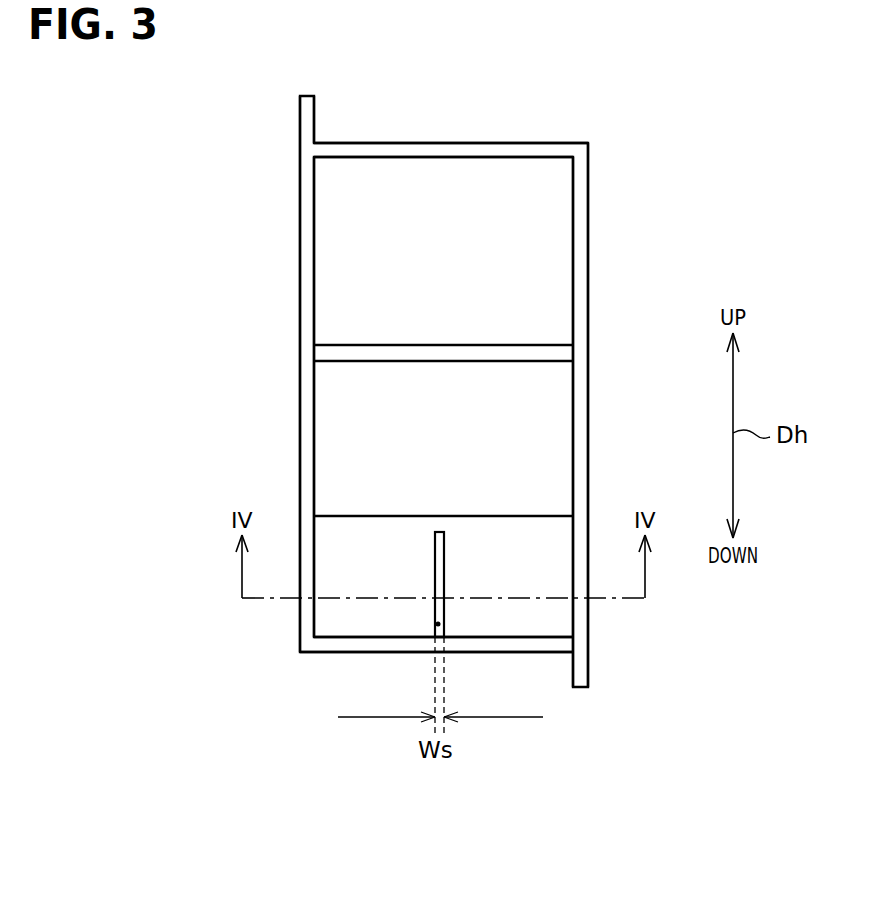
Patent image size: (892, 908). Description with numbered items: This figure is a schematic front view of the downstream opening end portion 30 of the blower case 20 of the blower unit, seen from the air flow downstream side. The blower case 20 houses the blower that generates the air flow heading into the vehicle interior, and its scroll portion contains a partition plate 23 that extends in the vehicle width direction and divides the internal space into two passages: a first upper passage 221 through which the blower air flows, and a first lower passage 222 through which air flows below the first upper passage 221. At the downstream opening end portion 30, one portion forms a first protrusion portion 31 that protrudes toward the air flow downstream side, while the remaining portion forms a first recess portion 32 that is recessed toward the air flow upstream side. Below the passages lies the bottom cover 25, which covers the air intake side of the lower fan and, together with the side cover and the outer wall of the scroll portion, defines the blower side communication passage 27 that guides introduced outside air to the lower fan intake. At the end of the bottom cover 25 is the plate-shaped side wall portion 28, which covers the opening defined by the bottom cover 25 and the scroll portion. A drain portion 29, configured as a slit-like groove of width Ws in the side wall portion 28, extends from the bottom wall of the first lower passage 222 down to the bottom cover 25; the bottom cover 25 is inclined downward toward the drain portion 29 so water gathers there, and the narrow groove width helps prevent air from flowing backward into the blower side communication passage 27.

The blower case 20 is at (561, 108).
The downstream opening end portion 30 is at (482, 143).
The first protrusion portion 31 is at (581, 199).
The first recess portion 32 is at (303, 281).
The first upper passage 221 is at (359, 224).
The first lower passage 222 is at (359, 407).
The partition plate 23 is at (388, 352).
The bottom cover 25 is at (332, 645).
The drain portion 29 is at (435, 614).
The blower side communication passage 27 is at (438, 624).
The side wall portion 28 is at (535, 622).